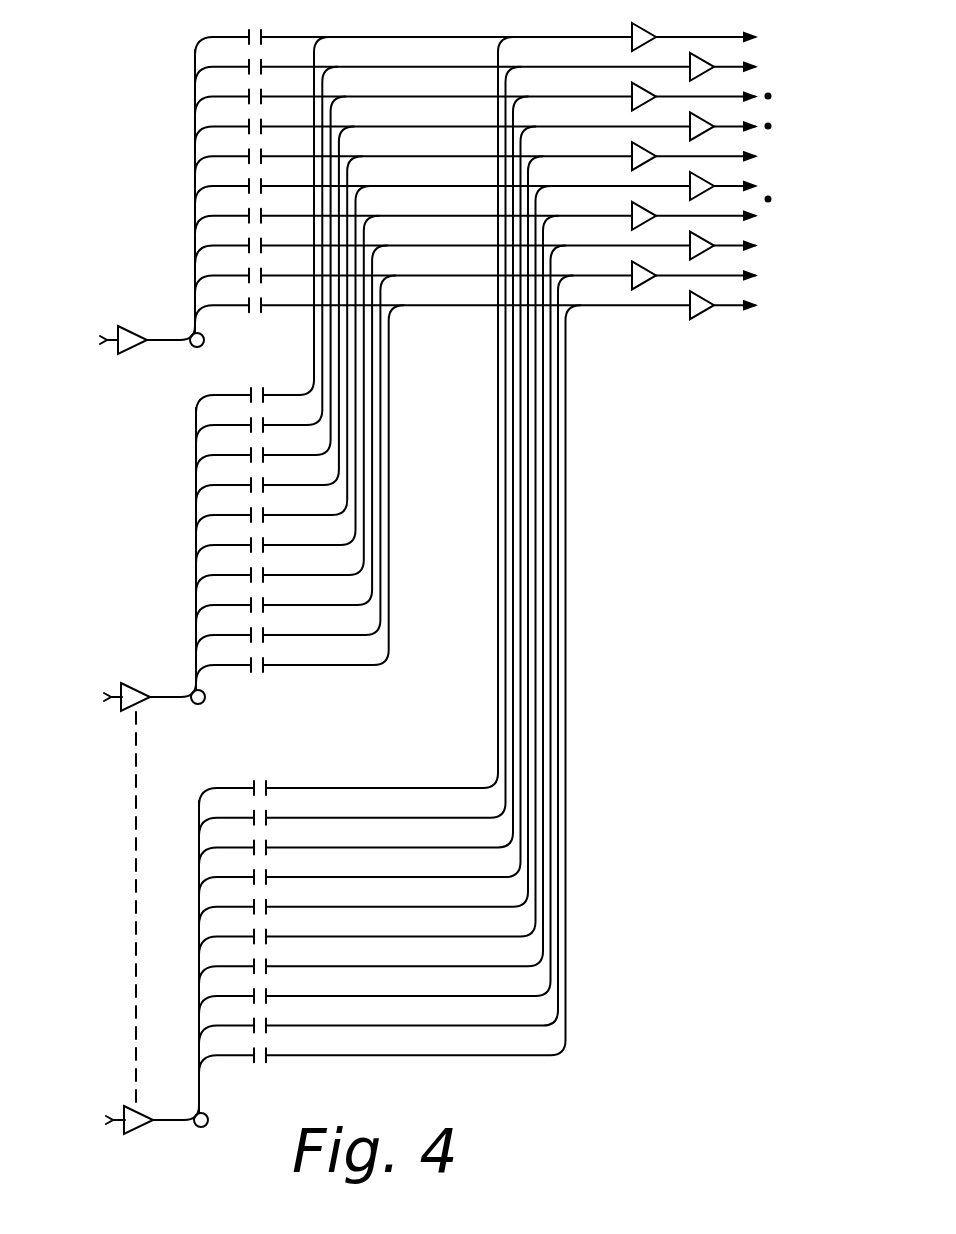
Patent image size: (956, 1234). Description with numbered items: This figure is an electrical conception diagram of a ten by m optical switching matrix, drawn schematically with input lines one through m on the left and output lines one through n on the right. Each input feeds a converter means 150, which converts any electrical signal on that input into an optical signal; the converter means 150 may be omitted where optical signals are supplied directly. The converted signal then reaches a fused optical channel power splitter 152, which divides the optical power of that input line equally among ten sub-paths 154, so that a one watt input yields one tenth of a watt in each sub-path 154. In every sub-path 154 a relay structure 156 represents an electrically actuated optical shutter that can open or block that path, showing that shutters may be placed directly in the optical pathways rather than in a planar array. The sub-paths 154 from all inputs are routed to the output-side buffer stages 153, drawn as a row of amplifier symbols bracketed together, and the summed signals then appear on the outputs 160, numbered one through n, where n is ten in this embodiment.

The converter means 150 is at (148, 302).
The fused optical channel power splitter 152 is at (205, 340).
The output buffer amplifiers 153 is at (735, 24).
The sub-path 154 is at (217, 34).
The relay structures 156 is at (256, 23).
The outputs 160 is at (762, 323).